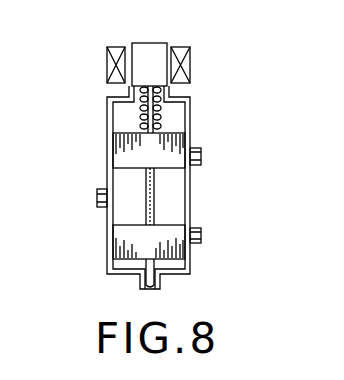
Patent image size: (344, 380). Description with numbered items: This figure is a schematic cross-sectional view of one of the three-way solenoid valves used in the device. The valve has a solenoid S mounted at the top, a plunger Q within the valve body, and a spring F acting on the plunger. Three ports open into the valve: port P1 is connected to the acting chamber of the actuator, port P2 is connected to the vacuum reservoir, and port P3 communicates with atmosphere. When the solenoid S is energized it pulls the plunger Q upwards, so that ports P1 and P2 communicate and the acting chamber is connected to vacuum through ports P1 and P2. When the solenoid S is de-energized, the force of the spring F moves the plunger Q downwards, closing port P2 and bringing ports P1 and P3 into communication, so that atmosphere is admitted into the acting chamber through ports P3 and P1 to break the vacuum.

The solenoid S is at (153, 52).
The plunger Q is at (113, 158).
The spring F is at (158, 122).
The port P1 is at (98, 198).
The port P2 is at (201, 157).
The port P3 is at (201, 237).